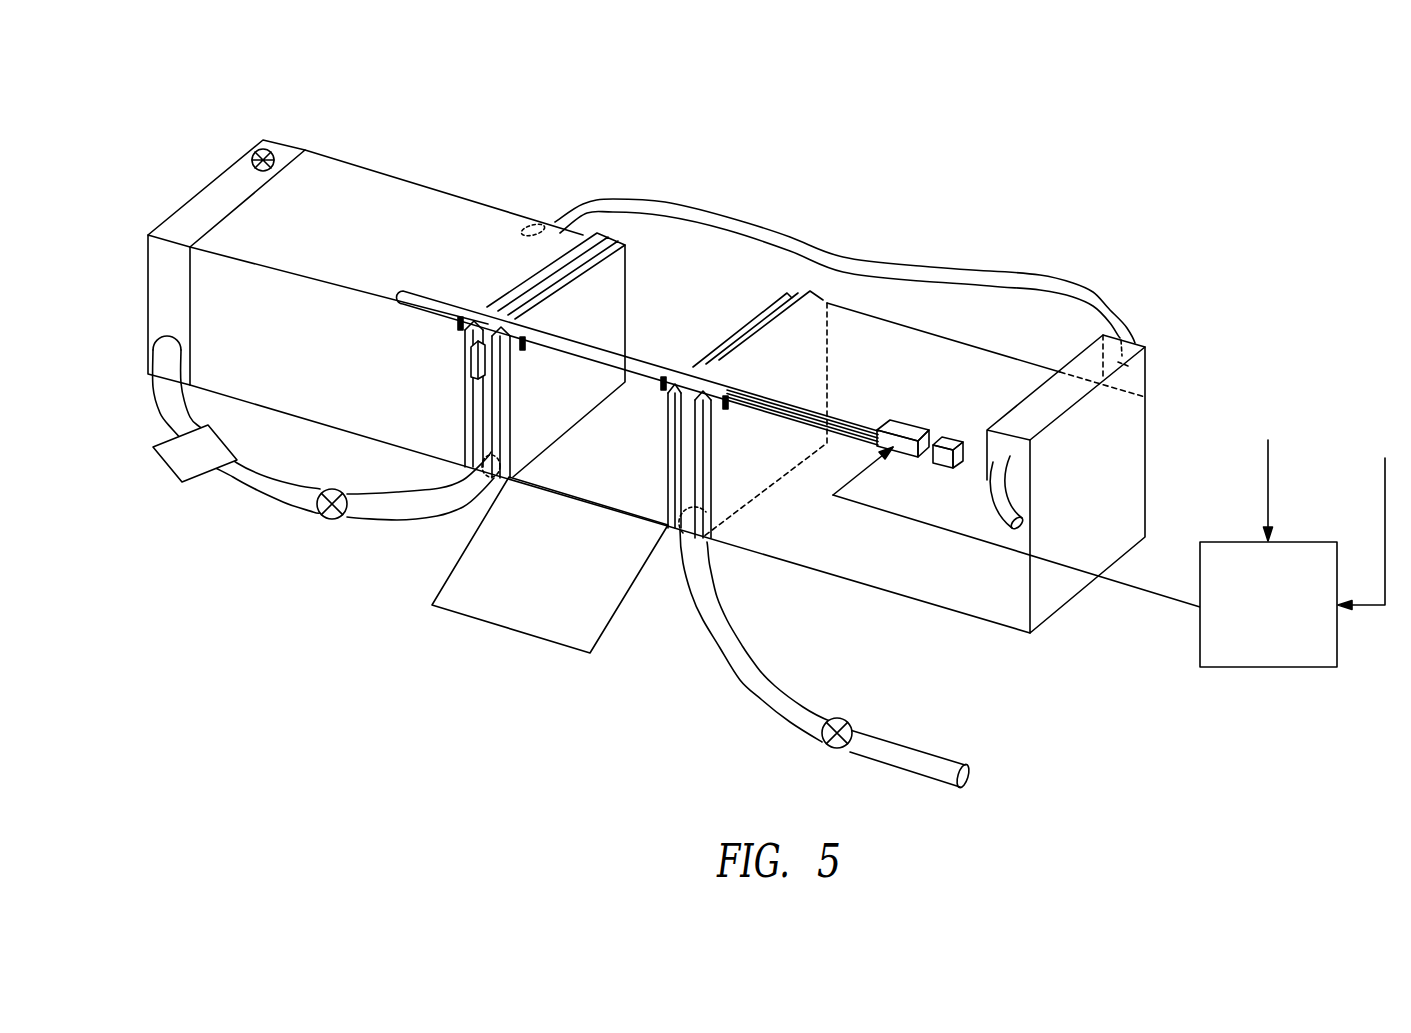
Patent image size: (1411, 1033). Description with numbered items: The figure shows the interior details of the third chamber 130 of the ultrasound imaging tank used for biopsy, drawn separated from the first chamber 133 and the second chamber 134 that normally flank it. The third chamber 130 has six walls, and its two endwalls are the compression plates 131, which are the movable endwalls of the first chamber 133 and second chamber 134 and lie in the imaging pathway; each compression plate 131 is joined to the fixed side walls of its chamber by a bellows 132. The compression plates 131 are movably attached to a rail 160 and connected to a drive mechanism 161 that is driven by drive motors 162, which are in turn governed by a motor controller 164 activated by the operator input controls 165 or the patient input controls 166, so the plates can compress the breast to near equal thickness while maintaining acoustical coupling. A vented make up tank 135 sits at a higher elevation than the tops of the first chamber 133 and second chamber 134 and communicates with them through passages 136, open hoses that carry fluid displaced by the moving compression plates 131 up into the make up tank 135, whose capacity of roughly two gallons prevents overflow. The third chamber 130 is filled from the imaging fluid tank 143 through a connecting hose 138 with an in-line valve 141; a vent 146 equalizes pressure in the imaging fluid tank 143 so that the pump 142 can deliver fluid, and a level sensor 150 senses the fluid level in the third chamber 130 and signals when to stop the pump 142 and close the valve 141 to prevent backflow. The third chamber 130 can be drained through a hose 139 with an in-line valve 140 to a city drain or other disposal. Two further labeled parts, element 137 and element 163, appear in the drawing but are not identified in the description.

The third chamber 130 is at (665, 157).
The compression plate 131 is at (610, 300).
The bellows 132 is at (800, 286).
The first chamber 133 is at (356, 67).
The second chamber 134 is at (873, 220).
The make up tank 135 is at (1030, 418).
The passage 136 is at (1013, 480).
The access door 137 is at (513, 584).
The connecting hose 138 is at (400, 513).
The hose 139 is at (735, 660).
The in-line valve 140 is at (837, 718).
The in-line valve 141 is at (336, 488).
The pump 142 is at (178, 458).
The imaging fluid tank 143 is at (192, 223).
The vent 146 is at (264, 149).
The level sensor 150 is at (470, 360).
The rail 160 is at (802, 382).
The drive mechanism 161 is at (800, 420).
The drive motor 162 is at (893, 427).
The connector 163 is at (950, 440).
The motor controller 164 is at (1243, 620).
The operator input controls 165 is at (1270, 474).
The patient input controls 166 is at (1370, 518).